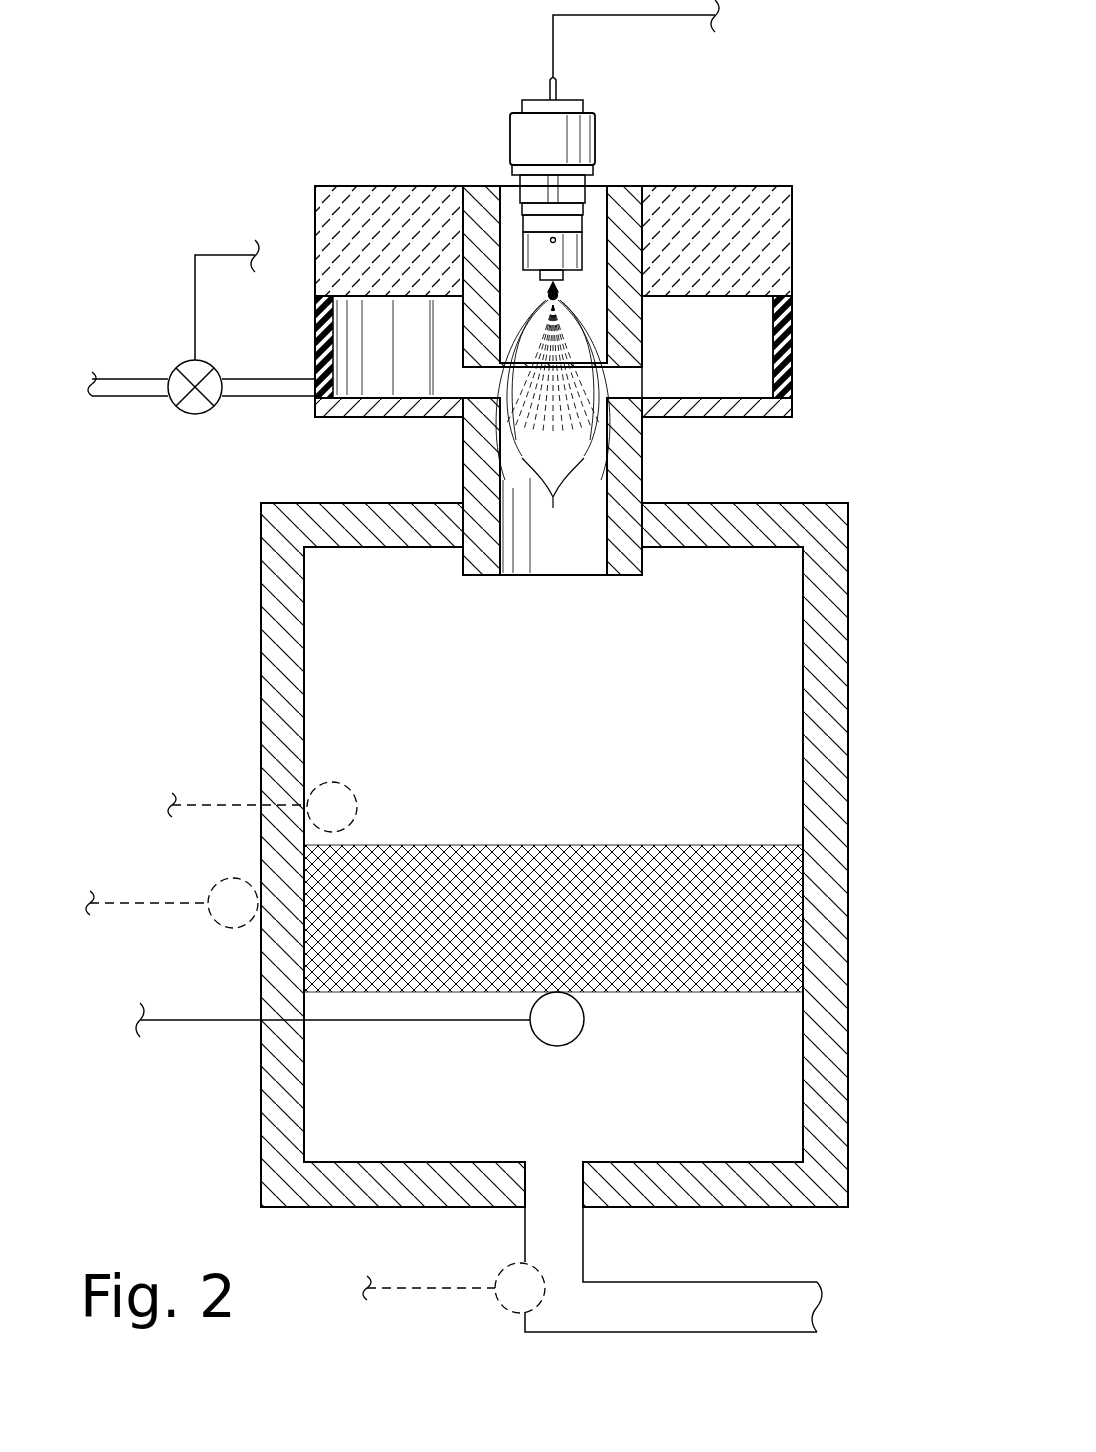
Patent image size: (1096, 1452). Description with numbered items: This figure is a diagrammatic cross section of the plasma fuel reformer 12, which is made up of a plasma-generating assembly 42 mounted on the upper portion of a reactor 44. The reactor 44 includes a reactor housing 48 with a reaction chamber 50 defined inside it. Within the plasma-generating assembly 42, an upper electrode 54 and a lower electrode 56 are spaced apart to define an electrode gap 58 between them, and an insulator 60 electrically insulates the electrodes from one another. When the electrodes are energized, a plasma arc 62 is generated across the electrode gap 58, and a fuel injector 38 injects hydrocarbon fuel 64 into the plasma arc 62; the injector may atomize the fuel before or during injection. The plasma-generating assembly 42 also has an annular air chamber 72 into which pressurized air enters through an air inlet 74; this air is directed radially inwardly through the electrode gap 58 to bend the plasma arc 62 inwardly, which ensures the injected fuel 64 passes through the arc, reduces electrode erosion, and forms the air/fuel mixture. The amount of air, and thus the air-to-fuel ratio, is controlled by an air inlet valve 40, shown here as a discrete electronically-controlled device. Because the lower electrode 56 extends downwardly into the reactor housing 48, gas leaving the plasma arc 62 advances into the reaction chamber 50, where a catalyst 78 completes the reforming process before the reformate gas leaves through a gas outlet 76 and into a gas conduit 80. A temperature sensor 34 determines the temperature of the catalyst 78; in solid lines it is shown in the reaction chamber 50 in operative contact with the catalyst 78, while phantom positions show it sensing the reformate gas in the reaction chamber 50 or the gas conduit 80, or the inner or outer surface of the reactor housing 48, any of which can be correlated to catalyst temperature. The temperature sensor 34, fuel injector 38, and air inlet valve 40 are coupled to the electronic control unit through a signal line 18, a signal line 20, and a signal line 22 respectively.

The plasma fuel reformer 12 is at (592, 327).
The signal line 18 is at (224, 803).
The signal line 20 is at (645, 16).
The signal line 22 is at (222, 255).
The temperature sensor 34 is at (338, 783).
The fuel injector 38 is at (592, 136).
The air inlet valve 40 is at (197, 414).
The plasma-generating assembly 42 is at (808, 260).
The reactor 44 is at (605, 917).
The reactor housing 48 is at (838, 748).
The reaction chamber 50 is at (800, 1032).
The upper electrode 54 is at (625, 316).
The lower electrode 56 is at (632, 447).
The electrode gap 58 is at (620, 368).
The insulator 60 is at (786, 326).
The plasma arc 62 is at (543, 515).
The hydrocarbon fuel 64 is at (540, 306).
The annular air chamber 72 is at (764, 360).
The air inlet 74 is at (318, 392).
The gas outlet 76 is at (570, 1178).
The catalyst 78 is at (542, 845).
The gas conduit 80 is at (566, 1242).